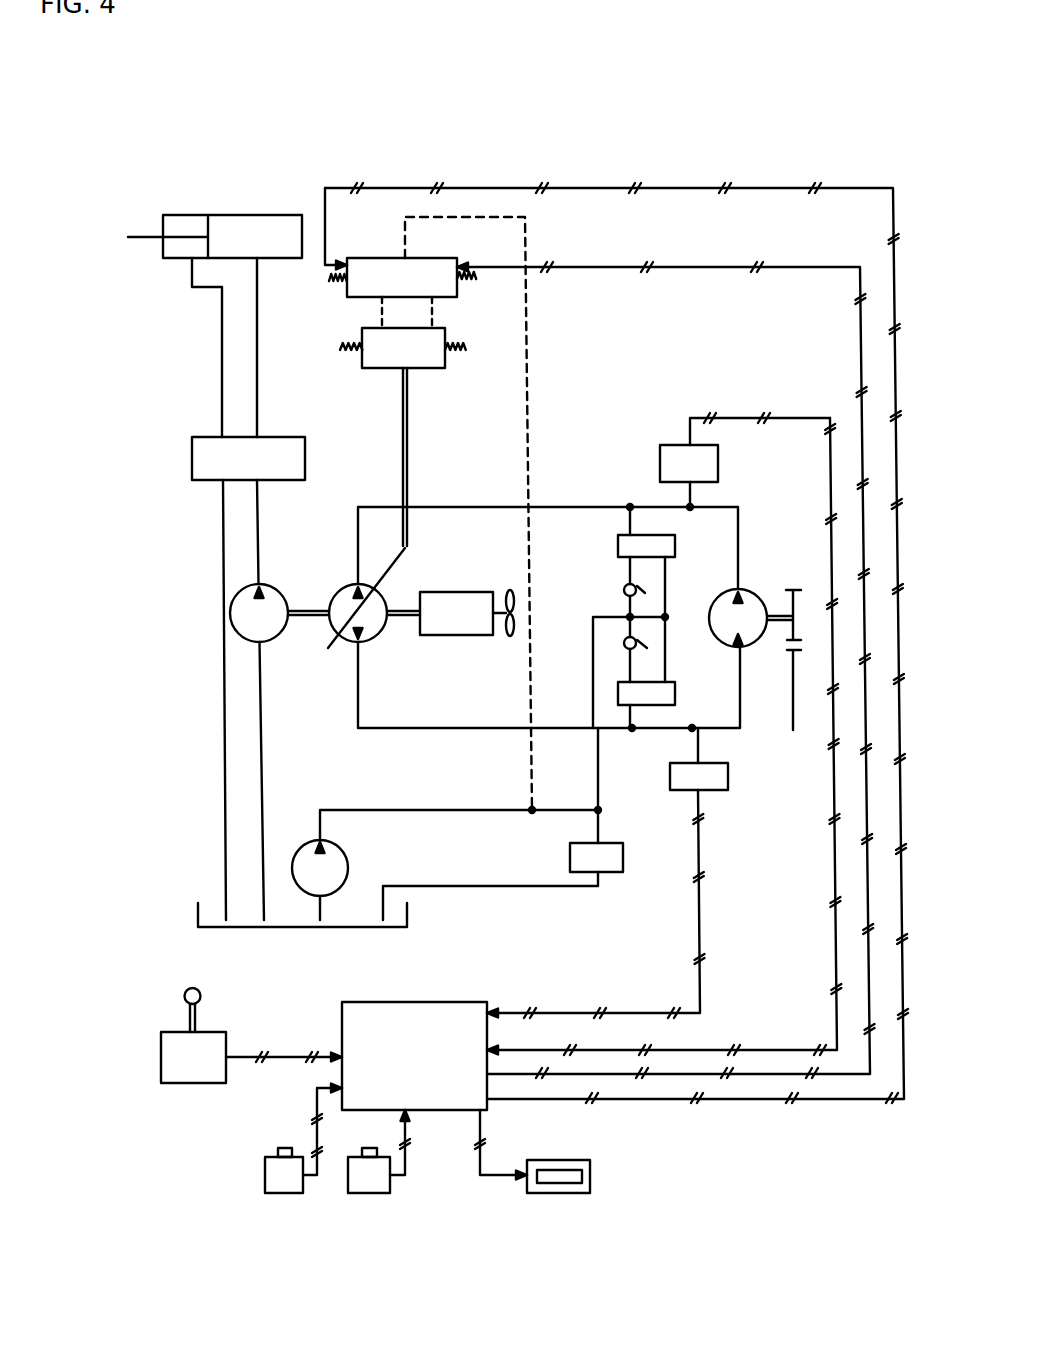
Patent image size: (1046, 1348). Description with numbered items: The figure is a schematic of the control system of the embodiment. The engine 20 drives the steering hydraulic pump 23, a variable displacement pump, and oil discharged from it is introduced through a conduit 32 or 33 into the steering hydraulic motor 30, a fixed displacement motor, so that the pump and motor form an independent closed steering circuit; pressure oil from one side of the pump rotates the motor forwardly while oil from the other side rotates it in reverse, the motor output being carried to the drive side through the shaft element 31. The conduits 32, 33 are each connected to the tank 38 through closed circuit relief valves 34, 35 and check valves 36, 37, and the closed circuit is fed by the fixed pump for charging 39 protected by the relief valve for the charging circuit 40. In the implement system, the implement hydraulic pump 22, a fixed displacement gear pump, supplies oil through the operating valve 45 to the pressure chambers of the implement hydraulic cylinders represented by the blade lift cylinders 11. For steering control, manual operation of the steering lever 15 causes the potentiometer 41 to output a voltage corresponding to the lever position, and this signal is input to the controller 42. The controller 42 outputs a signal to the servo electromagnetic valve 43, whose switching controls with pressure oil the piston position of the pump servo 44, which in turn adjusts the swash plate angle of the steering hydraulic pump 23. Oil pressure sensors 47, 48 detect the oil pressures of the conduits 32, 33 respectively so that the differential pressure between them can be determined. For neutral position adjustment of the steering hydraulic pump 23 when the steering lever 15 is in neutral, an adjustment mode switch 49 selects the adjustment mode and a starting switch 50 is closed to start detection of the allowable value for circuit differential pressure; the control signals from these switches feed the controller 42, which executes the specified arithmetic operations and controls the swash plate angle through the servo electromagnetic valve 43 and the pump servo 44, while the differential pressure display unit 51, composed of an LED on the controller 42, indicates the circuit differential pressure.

The blade lift cylinder 11 is at (282, 215).
The steering lever 15 is at (183, 1012).
The engine 20 is at (470, 592).
The implement hydraulic pump 22 is at (238, 633).
The steering hydraulic pump 23 is at (343, 589).
The steering hydraulic motor 30 is at (756, 596).
The output shaft / axle 31 is at (787, 628).
The conduit 32 is at (600, 505).
The conduit 33 is at (562, 728).
The closed circuit relief valve 34 is at (675, 545).
The closed circuit relief valve 35 is at (675, 697).
The check valve 36 is at (624, 588).
The check valve 37 is at (624, 645).
The tank 38 is at (198, 912).
The fixed pump for charging 39 is at (305, 858).
The relief valve for charging circuit 40 is at (615, 860).
The potentiometer 41 is at (200, 1068).
The controller 42 is at (437, 1105).
The servo electromagnetic valve 43 is at (443, 258).
The pump servo 44 is at (438, 368).
The operating valve 45 is at (212, 437).
The oil pressure sensor 47 is at (718, 462).
The oil pressure sensor 48 is at (728, 773).
The adjustment mode switch 49 is at (284, 1195).
The starting switch 50 is at (371, 1195).
The differential pressure display unit 51 is at (590, 1179).